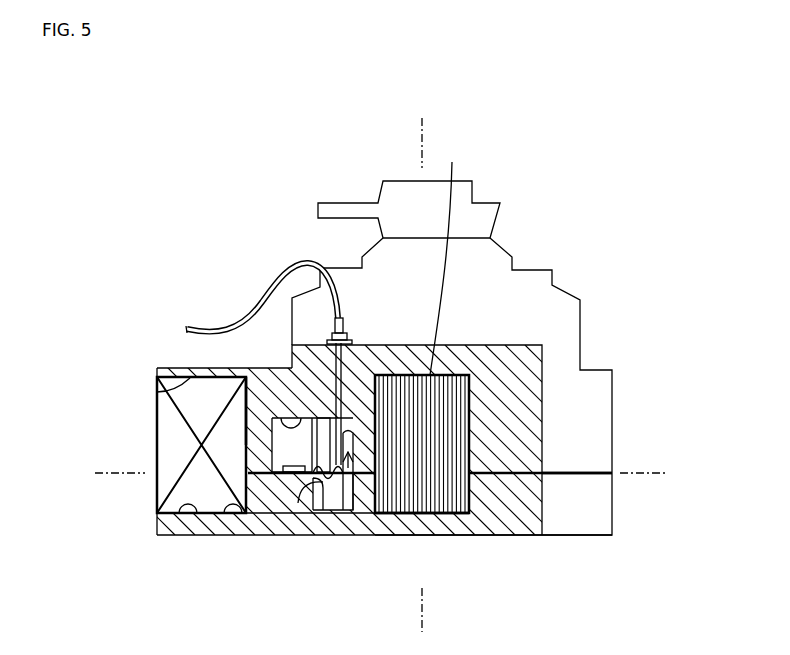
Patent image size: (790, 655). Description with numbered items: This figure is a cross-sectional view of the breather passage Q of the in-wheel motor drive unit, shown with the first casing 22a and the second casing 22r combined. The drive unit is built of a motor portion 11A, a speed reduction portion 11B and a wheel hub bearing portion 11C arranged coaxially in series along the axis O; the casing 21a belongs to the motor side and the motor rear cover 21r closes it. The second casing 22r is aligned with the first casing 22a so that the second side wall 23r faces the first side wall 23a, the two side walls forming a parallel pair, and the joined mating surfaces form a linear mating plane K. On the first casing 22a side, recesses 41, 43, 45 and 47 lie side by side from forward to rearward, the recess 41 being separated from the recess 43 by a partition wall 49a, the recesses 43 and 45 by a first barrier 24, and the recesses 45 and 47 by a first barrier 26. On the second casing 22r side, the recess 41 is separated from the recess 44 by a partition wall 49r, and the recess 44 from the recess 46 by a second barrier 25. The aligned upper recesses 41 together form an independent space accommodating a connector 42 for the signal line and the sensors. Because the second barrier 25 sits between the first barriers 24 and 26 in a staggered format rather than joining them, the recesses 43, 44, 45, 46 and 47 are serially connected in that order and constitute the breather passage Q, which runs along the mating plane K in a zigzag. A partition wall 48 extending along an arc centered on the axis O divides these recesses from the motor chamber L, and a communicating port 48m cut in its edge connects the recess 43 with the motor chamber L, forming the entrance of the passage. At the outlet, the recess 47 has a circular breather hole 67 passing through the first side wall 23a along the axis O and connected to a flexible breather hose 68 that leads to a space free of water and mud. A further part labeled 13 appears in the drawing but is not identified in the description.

The motor portion 11A is at (623, 441).
The speed reduction portion 11B is at (590, 313).
The wheel hub bearing portion 11C is at (516, 211).
The lens mount 13 is at (417, 514).
The casing 21a is at (578, 476).
The motor rear cover 21r is at (443, 538).
The first casing 22a is at (177, 366).
The second casing 22r is at (200, 539).
The first side wall 23a is at (157, 370).
The second side wall 23r is at (157, 526).
The first barrier 24 is at (312, 450).
The second barrier 25 is at (318, 513).
The first barrier 26 is at (353, 514).
The recess 41 is at (180, 390).
The connector 42 is at (170, 483).
The recess 43 is at (282, 416).
The recess 44 is at (257, 533).
The recess 45 is at (323, 418).
The recess 46 is at (345, 512).
The recess 47 is at (341, 430).
The partition wall 48 is at (375, 412).
The communicating port 48m is at (284, 466).
The partition wall 49a is at (248, 415).
The partition wall 49r is at (226, 532).
The breather hole 67 is at (360, 345).
The breather hose 68 is at (192, 323).
The mating plane K is at (392, 473).
The motor chamber L is at (465, 556).
The axis O is at (421, 362).
The breather passage Q is at (299, 503).